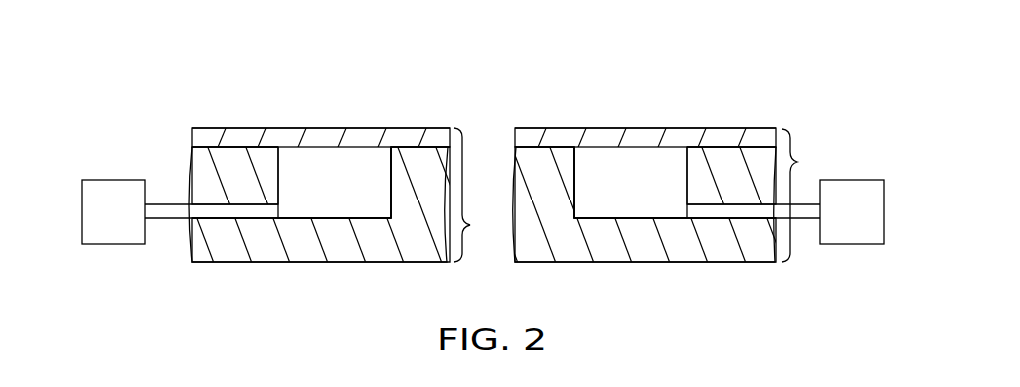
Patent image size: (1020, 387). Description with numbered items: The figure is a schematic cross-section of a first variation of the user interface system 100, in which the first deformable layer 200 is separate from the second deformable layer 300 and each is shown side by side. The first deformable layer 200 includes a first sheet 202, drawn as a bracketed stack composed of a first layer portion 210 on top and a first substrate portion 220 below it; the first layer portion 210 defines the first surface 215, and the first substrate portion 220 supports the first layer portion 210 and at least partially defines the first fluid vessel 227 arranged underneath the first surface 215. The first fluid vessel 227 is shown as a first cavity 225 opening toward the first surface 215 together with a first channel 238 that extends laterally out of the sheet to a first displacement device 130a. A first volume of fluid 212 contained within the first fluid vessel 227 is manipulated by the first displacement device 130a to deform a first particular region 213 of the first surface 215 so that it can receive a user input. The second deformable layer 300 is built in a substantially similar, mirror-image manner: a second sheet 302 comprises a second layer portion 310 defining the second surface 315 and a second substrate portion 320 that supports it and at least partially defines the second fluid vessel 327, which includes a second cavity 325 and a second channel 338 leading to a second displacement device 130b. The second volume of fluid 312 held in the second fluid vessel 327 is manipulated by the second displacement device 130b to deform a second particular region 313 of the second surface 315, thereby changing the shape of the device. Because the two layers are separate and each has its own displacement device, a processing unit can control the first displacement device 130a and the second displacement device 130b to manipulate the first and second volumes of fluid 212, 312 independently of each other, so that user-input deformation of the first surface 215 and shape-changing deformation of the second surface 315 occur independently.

The user interface system 100 is at (674, 41).
The first deformable layer 200 is at (142, 117).
The second deformable layer 300 is at (821, 117).
The first displacement device 130a is at (110, 247).
The second displacement device 130b is at (865, 247).
The first sheet 202 is at (483, 195).
The second sheet 302 is at (812, 195).
The first layer portion 210 is at (207, 138).
The second layer portion 310 is at (729, 141).
The first volume of fluid 212 is at (380, 202).
The second volume of fluid 312 is at (585, 204).
The first particular region 213 is at (368, 125).
The second particular region 313 is at (638, 121).
The first surface 215 is at (210, 125).
The second surface 315 is at (543, 124).
The first substrate portion 220 is at (367, 266).
The second substrate portion 320 is at (597, 266).
The first cavity 225 is at (363, 189).
The second cavity 325 is at (638, 191).
The first fluid vessel 227 is at (305, 206).
The second fluid vessel 327 is at (658, 205).
The first channel 238 is at (165, 221).
The second channel 338 is at (808, 222).